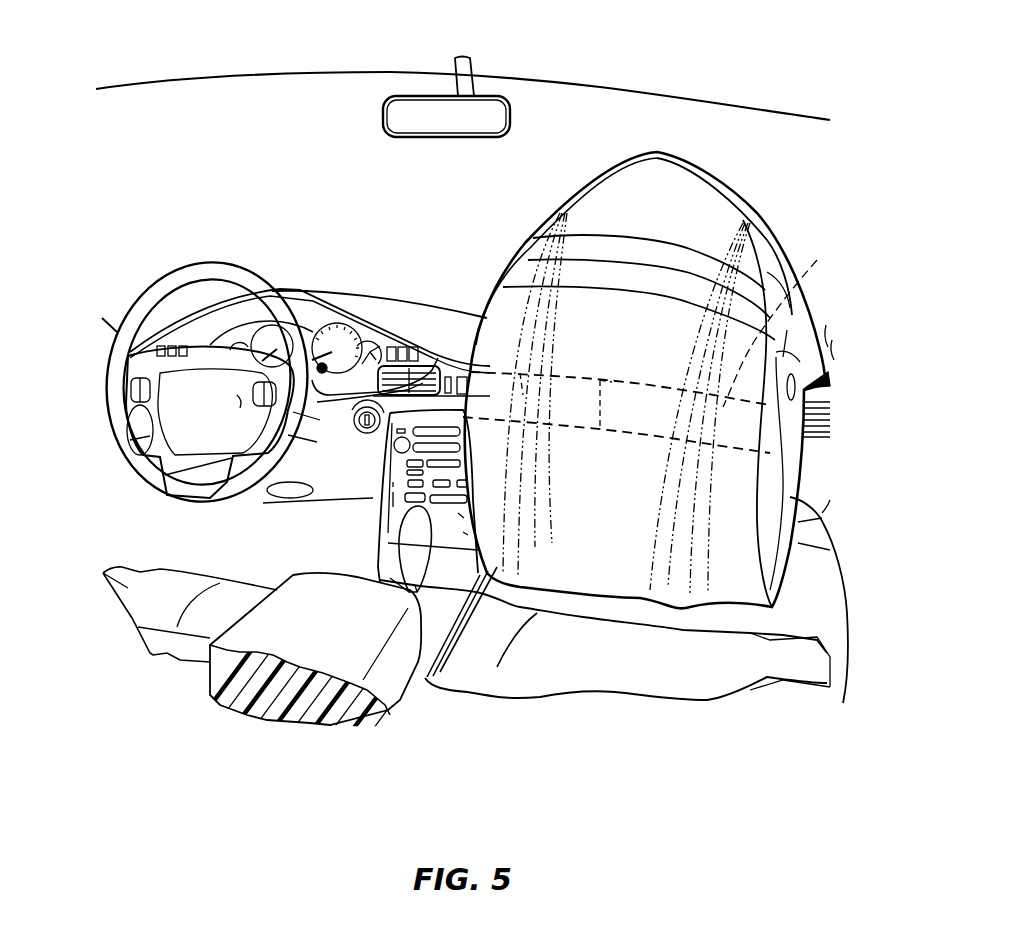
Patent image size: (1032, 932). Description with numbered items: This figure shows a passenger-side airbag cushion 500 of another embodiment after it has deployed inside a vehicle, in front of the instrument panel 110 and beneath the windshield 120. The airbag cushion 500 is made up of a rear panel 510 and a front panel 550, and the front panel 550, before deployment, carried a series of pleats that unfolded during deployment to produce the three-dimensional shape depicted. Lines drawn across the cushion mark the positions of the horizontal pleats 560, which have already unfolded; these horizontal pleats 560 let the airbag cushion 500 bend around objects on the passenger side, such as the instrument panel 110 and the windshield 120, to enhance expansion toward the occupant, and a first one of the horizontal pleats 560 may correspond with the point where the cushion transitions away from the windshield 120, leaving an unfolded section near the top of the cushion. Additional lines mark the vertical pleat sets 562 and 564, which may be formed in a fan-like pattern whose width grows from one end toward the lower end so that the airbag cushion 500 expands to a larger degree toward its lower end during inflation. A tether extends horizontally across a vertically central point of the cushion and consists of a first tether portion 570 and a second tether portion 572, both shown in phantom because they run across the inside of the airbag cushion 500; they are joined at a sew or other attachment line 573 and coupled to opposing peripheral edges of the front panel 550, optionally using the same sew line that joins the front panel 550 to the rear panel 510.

The instrument panel 110 is at (310, 322).
The windshield 120 is at (312, 135).
The airbag cushion 500 is at (660, 612).
The rear panel 510 is at (843, 703).
The front panel 550 is at (600, 543).
The horizontal pleats 560 is at (582, 258).
The vertical pleat set 562 is at (503, 455).
The vertical pleat set 564 is at (650, 520).
The first tether portion 570 is at (560, 373).
The second tether portion 572 is at (792, 325).
The attachment line 573 is at (603, 403).